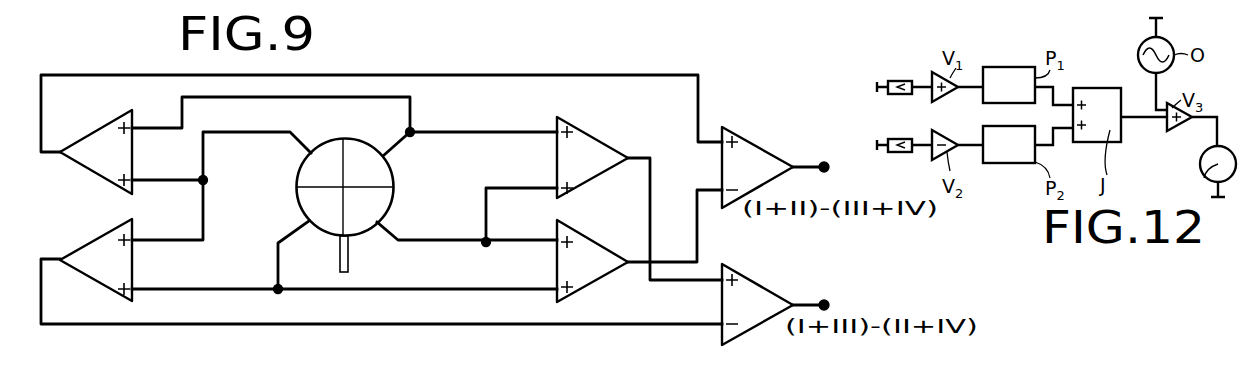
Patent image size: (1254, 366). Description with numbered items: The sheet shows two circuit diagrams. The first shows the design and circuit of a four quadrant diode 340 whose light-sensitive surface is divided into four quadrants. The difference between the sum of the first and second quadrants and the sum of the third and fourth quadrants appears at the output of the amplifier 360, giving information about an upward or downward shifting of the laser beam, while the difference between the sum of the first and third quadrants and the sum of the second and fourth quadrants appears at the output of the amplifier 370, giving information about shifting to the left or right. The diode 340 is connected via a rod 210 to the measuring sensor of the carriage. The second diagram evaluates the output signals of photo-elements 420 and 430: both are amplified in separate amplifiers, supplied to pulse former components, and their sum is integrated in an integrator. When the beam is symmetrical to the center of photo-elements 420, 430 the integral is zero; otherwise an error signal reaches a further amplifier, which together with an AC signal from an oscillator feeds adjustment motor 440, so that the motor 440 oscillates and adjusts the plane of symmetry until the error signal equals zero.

In FIG. 9, the rod 210 is at (349, 262).
In FIG. 9, the four quadrant diode 340 is at (386, 174).
In FIG. 9, the amplifier 360 is at (741, 133).
In FIG. 9, the amplifier 370 is at (774, 326).
In FIG. 12, the photo-element 420 is at (900, 81).
In FIG. 12, the photo-element 430 is at (902, 139).
In FIG. 12, the adjustment motor 440 is at (1212, 168).